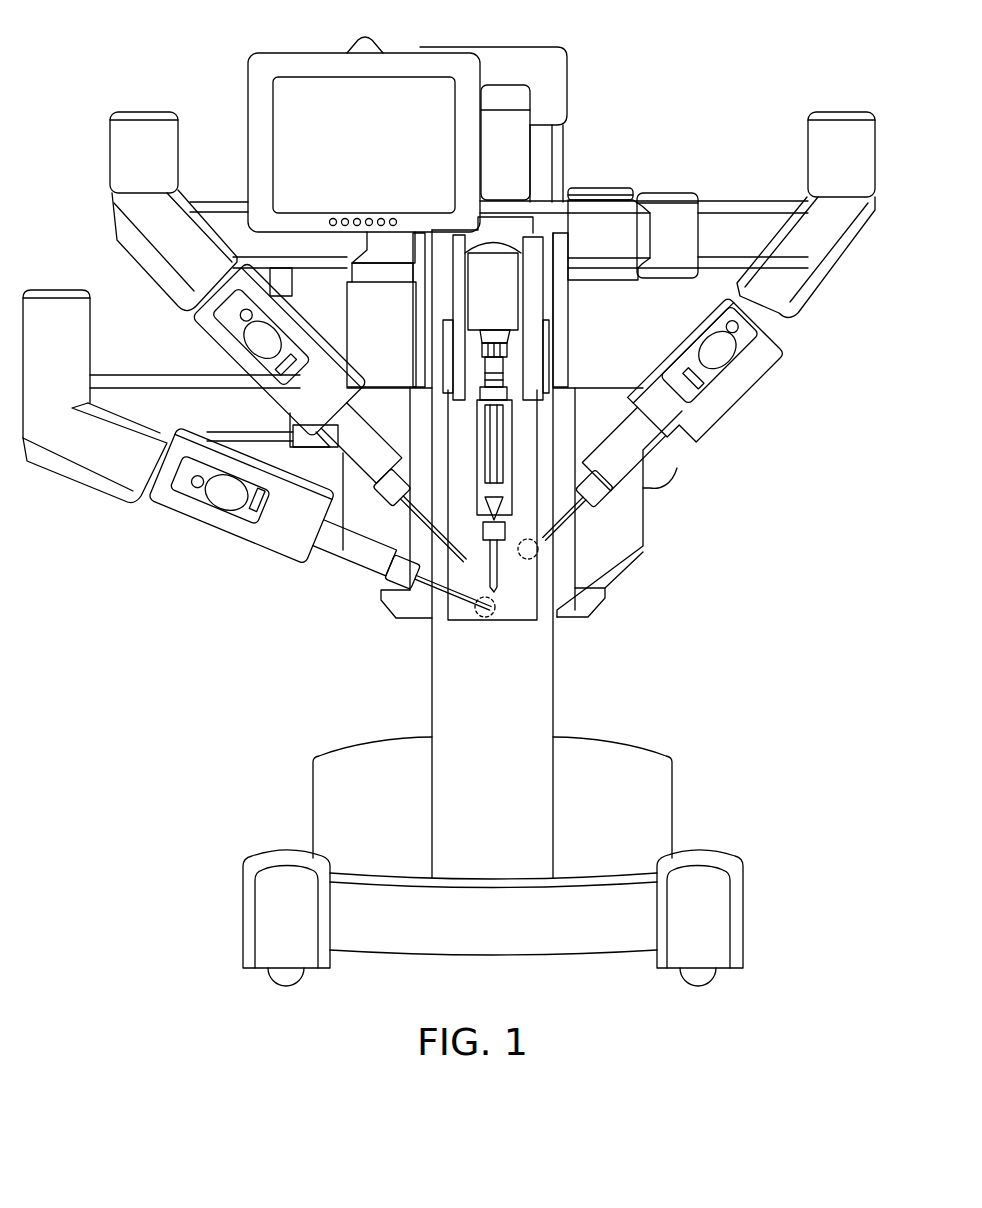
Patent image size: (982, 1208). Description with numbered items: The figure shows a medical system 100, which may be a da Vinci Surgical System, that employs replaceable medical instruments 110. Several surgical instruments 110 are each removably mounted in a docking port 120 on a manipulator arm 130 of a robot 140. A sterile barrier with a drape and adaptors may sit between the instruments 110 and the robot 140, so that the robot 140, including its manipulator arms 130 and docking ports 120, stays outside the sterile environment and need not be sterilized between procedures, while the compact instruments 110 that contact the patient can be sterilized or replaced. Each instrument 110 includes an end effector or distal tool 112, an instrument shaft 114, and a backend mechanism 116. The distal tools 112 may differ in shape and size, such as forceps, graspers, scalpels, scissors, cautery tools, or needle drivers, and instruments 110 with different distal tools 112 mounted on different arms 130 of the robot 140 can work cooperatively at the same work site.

The medical system 100 is at (104, 63).
The medical instrument 110 is at (677, 468).
The distal tool 112 is at (531, 562).
The instrument shaft 114 is at (345, 556).
The backend mechanism 116 is at (227, 503).
The docking port 120 is at (195, 497).
The manipulator arm 130 is at (127, 257).
The robot 140 is at (515, 783).